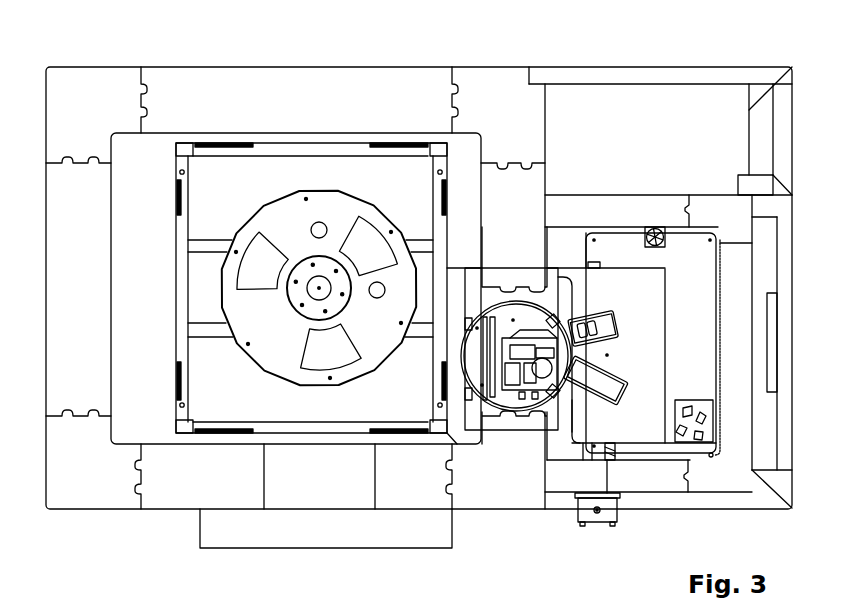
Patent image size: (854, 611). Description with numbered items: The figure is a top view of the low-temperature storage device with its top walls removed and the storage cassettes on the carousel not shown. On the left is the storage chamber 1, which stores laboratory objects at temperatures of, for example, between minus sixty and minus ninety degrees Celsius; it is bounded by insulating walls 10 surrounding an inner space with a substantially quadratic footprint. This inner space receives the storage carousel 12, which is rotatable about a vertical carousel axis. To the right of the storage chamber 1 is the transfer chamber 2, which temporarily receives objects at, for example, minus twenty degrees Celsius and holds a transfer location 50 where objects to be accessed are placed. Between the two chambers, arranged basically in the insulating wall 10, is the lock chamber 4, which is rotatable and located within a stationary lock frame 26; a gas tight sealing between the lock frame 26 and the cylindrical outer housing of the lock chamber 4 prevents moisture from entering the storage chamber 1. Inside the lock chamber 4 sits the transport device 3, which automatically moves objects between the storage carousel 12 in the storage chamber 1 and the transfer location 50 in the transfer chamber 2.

The insulating walls 10 is at (96, 500).
The storage chamber 1 is at (196, 447).
The storage carousel 12 is at (315, 383).
The lock chamber 4 is at (486, 405).
The transport device 3 is at (513, 404).
The lock frame 26 is at (550, 285).
The transfer chamber 2 is at (636, 427).
The transfer location 50 is at (601, 428).